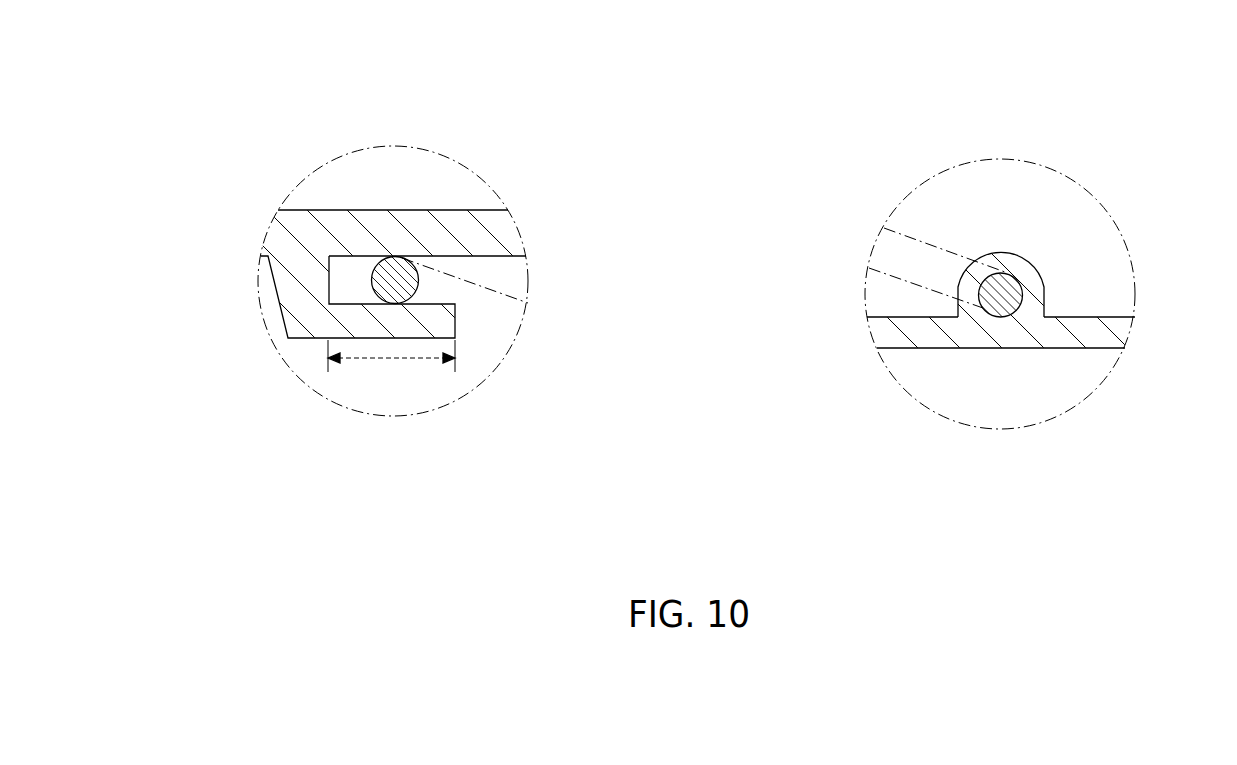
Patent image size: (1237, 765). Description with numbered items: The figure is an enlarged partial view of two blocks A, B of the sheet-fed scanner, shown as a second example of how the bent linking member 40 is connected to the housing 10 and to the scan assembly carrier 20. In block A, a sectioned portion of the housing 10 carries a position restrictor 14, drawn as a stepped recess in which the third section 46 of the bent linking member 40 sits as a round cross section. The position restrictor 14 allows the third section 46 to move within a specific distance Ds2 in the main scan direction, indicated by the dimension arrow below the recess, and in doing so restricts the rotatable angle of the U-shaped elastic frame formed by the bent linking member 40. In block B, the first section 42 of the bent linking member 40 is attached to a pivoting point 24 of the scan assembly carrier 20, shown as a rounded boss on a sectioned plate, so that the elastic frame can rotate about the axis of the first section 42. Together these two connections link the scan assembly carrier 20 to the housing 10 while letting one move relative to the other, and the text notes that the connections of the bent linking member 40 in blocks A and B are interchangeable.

The housing 10 is at (403, 208).
The position restrictor 14 is at (355, 322).
The scan assembly carrier 20 is at (1090, 318).
The pivoting point 24 is at (1029, 273).
The bent linking member 40 is at (472, 283).
The first section 42 is at (1000, 275).
The third section 46 is at (380, 266).
The block A is at (268, 250).
The block B is at (1120, 348).
The specific distance Ds2 is at (391, 374).